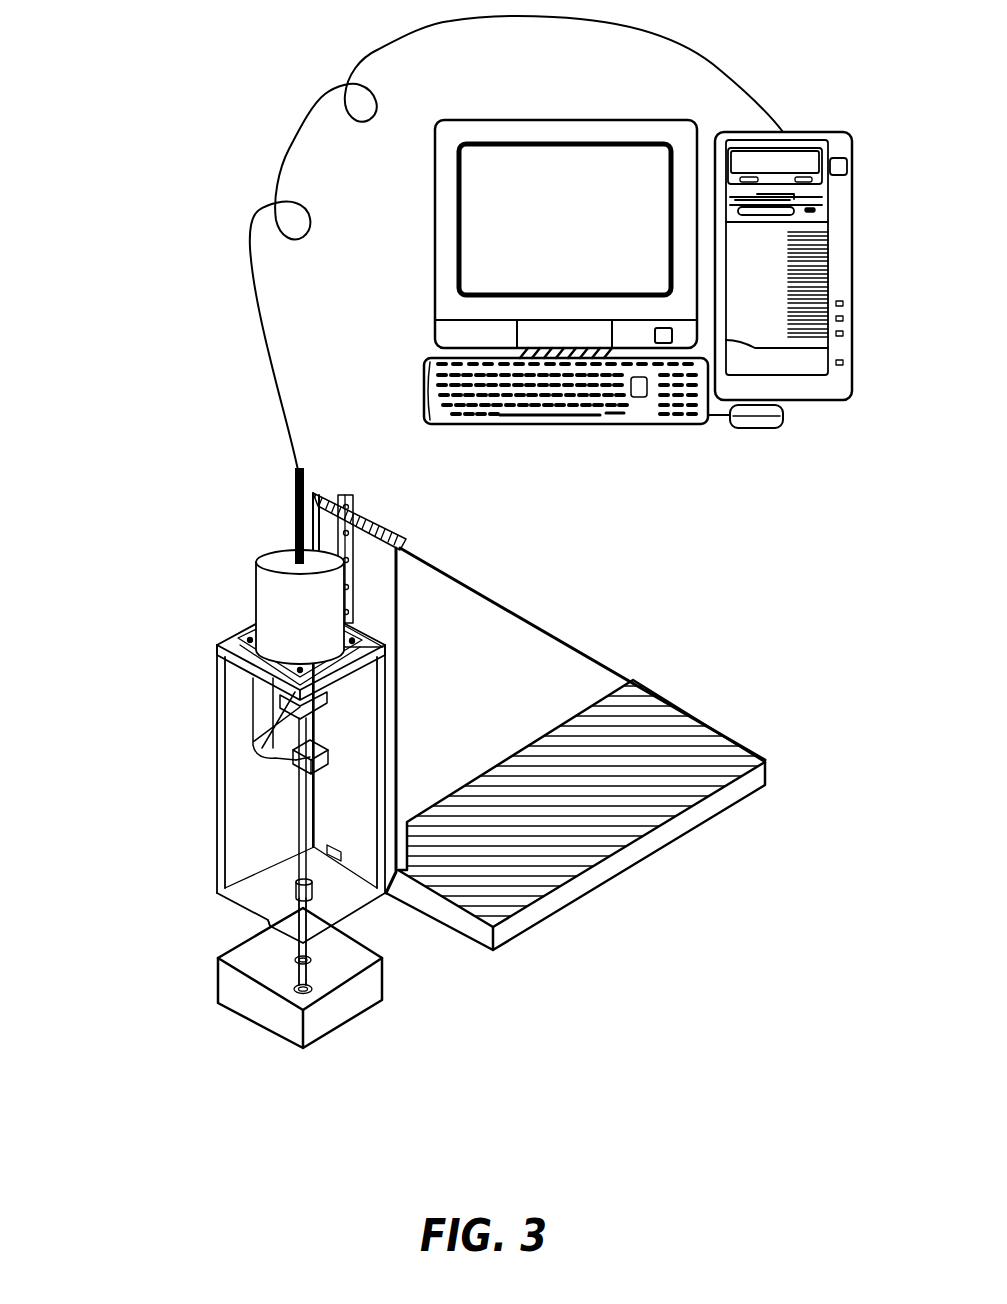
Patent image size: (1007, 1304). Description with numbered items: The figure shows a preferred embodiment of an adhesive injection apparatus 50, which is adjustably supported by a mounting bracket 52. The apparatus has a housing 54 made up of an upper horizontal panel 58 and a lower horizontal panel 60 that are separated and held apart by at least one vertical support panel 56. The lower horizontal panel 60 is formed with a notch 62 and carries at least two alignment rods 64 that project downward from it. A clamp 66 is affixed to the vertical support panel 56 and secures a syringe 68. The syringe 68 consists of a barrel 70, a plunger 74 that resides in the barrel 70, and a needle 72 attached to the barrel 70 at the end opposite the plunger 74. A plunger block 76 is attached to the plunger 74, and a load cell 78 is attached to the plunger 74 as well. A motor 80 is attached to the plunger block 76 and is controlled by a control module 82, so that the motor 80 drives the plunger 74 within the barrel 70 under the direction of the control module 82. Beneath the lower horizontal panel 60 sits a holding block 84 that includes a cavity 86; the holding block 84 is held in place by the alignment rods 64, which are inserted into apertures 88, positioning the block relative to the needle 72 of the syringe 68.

The adhesive injection apparatus 50 is at (612, 721).
The mounting bracket 52 is at (640, 860).
The housing 54 is at (332, 731).
The vertical support panel 56 is at (305, 820).
The upper horizontal panel 58 is at (243, 641).
The lower horizontal panel 60 is at (355, 905).
The notch 62 is at (270, 918).
The alignment rods 64 is at (313, 992).
The clamp 66 is at (262, 720).
The syringe 68 is at (350, 851).
The barrel 70 is at (297, 772).
The needle 72 is at (297, 893).
The plunger 74 is at (320, 757).
The plunger block 76 is at (297, 768).
The load cell 78 is at (280, 697).
The motor 80 is at (270, 568).
The control module 82 is at (838, 446).
The holding block 84 is at (303, 1010).
The cavity 86 is at (296, 956).
The apertures 88 is at (300, 992).